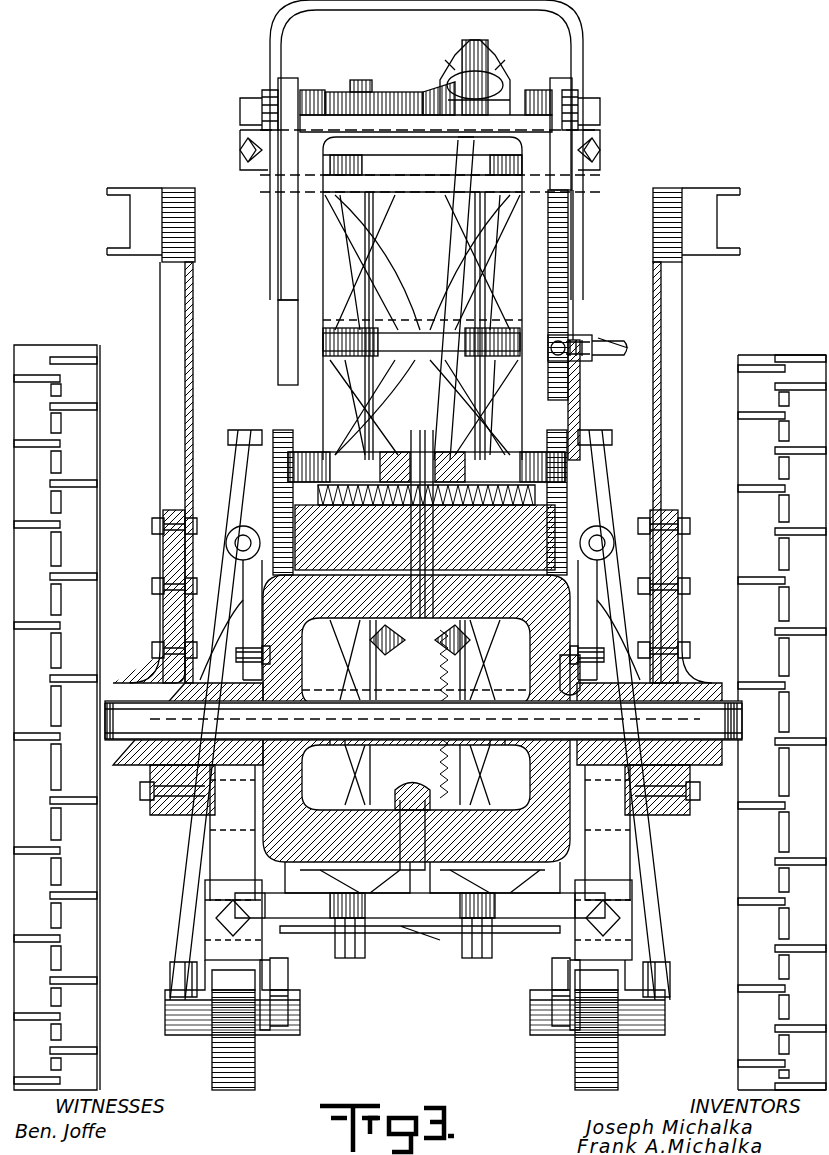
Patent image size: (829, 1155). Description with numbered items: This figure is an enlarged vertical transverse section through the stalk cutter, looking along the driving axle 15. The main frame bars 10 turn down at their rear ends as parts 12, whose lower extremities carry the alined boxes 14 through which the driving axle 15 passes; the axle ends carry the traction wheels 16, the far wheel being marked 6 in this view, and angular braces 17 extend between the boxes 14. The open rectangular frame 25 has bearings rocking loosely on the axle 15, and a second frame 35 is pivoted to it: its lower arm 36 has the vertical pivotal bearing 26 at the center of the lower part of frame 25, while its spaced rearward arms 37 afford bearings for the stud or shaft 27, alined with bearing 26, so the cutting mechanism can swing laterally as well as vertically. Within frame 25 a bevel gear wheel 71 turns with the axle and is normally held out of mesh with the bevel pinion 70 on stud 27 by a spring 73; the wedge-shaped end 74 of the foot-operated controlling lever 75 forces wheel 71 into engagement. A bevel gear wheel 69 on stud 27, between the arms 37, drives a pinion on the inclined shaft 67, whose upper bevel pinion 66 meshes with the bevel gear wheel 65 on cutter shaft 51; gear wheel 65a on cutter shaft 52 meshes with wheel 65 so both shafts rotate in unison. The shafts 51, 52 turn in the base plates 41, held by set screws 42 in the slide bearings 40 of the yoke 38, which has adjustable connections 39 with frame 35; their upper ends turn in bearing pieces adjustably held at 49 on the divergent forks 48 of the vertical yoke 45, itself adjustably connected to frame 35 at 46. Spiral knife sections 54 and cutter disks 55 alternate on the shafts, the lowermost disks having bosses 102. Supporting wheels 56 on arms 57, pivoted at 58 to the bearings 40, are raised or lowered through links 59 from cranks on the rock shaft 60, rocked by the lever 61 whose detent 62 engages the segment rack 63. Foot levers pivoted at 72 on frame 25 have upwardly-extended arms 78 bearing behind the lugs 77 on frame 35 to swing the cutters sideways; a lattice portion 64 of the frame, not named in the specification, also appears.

The track 6 is at (740, 852).
The main frame bars 10 is at (145, 220).
The downwardly-directed parts 12 is at (668, 332).
The boxes 14 is at (130, 683).
The driving axle 15 is at (156, 716).
The traction wheels 16 is at (85, 436).
The angular braces 17 is at (195, 816).
The open frame 25 is at (416, 717).
The pivotal bearing 26 is at (400, 837).
The shaft or stud 27 is at (422, 525).
The frame 35 is at (300, 270).
The lower arm 36 is at (365, 830).
The rearwardly-directed arms 37 is at (380, 464).
The yoke 38 is at (420, 832).
The adjustable connections 39 is at (274, 518).
The slide bearings 40 is at (205, 900).
The base plates 41 is at (312, 910).
The set screws 42 is at (228, 918).
The vertical yoke 45 is at (278, 215).
The adjustable connection 46 is at (242, 108).
The divergent forks 48 is at (268, 162).
The adjustable connections 49 is at (240, 148).
The cutter shaft 51 is at (486, 238).
The cutter shaft 52 is at (365, 296).
The spiral knife sections 54 is at (330, 872).
The cutter disks 55 is at (430, 934).
The supporting wheels 56 is at (255, 1060).
The arms 57 is at (198, 1012).
The pivotal connection 58 is at (178, 975).
The links 59 is at (240, 463).
The rock shaft 60 is at (330, 363).
The lever 61 is at (590, 358).
The detent 62 is at (562, 342).
The segment rack 63 is at (566, 278).
The frame lattice 64 is at (380, 390).
The bevel gear wheel 65 is at (432, 92).
The gear wheel 65a is at (340, 92).
The bevel gear pinion 66 is at (490, 62).
The shaft 67 is at (458, 228).
The bevel gear wheel 69 is at (535, 491).
The bevel pinion 70 is at (370, 636).
The bevel gear wheel 71 is at (460, 636).
The pivot 72 is at (248, 660).
The spring 73 is at (340, 760).
The wedge-shaped end 74 is at (578, 680).
The controlling lever 75 is at (490, 780).
The lugs 77 is at (248, 540).
The upwardly-extended arms 78 is at (234, 535).
The bosses 102 is at (360, 958).